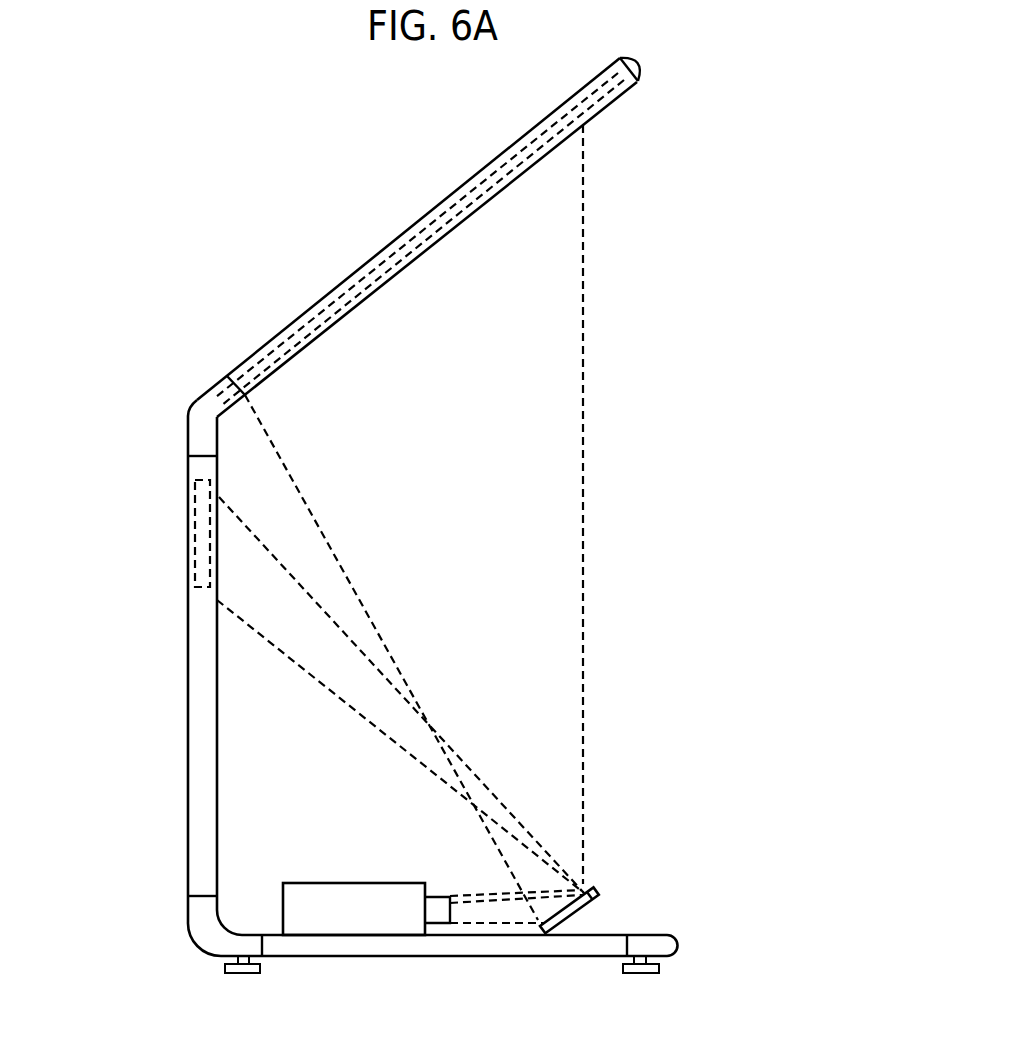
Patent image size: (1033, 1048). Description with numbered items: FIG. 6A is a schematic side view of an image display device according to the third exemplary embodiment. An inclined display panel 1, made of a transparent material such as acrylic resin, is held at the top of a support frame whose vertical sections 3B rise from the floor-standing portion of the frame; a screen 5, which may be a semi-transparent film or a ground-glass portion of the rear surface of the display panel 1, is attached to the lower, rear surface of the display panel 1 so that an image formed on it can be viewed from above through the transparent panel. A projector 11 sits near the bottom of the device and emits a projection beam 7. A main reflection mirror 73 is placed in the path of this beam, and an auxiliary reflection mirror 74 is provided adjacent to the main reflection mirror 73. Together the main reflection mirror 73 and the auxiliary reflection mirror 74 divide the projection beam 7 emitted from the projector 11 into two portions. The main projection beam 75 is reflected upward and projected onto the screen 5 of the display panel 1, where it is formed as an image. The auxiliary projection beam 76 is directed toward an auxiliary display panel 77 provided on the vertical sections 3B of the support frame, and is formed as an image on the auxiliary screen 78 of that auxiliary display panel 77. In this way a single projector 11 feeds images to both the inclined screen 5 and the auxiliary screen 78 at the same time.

The display panel 1 is at (463, 184).
The screen 5 is at (392, 268).
The main projection beam 75 is at (567, 376).
The auxiliary display panel 77 is at (190, 513).
The auxiliary screen 78 is at (220, 498).
The vertical sections 3B is at (198, 637).
The auxiliary projection beam 76 is at (277, 632).
The projector 11 is at (300, 897).
The auxiliary reflection mirror 74 is at (599, 898).
The projection beam 7 is at (482, 917).
The main reflection mirror 73 is at (575, 925).